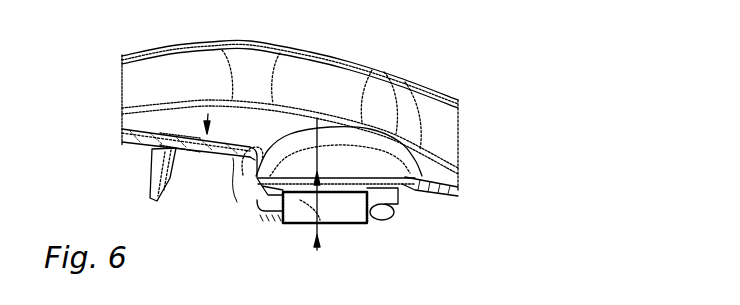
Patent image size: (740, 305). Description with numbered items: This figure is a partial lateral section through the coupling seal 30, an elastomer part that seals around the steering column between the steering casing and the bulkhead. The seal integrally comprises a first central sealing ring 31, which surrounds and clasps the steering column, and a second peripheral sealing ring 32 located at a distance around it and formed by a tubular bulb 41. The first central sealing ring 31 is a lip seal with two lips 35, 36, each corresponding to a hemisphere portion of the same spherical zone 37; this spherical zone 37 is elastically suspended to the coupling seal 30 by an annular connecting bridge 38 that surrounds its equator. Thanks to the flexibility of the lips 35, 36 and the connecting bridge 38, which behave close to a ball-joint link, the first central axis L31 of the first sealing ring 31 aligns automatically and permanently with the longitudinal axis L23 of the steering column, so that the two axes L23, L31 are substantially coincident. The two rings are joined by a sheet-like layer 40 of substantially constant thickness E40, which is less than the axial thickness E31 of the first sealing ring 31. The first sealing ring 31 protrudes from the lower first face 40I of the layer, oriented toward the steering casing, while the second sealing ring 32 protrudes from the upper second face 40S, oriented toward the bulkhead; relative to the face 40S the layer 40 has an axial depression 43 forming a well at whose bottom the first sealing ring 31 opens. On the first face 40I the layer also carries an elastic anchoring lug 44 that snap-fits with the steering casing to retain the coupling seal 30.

The coupling seal 30 is at (496, 51).
The first central sealing ring 31 is at (396, 213).
The second peripheral sealing ring 32 is at (432, 122).
The lip 35 is at (312, 196).
The lip 36 is at (300, 225).
The spherical zone 37 is at (357, 208).
The annular connecting bridge 38 is at (380, 215).
The layer 40 is at (240, 156).
The second face of the layer 40S is at (185, 133).
The first face of the layer 40I is at (183, 159).
The thickness of the layer E40 is at (200, 160).
The tubular bulb 41 is at (332, 80).
The axial depression 43 is at (366, 168).
The elastic anchoring lug 44 is at (153, 183).
The axial thickness of the first sealing ring E31 is at (292, 196).
The longitudinal axis of the steering column L23 is at (365, 207).
The first central axis L31 is at (334, 225).